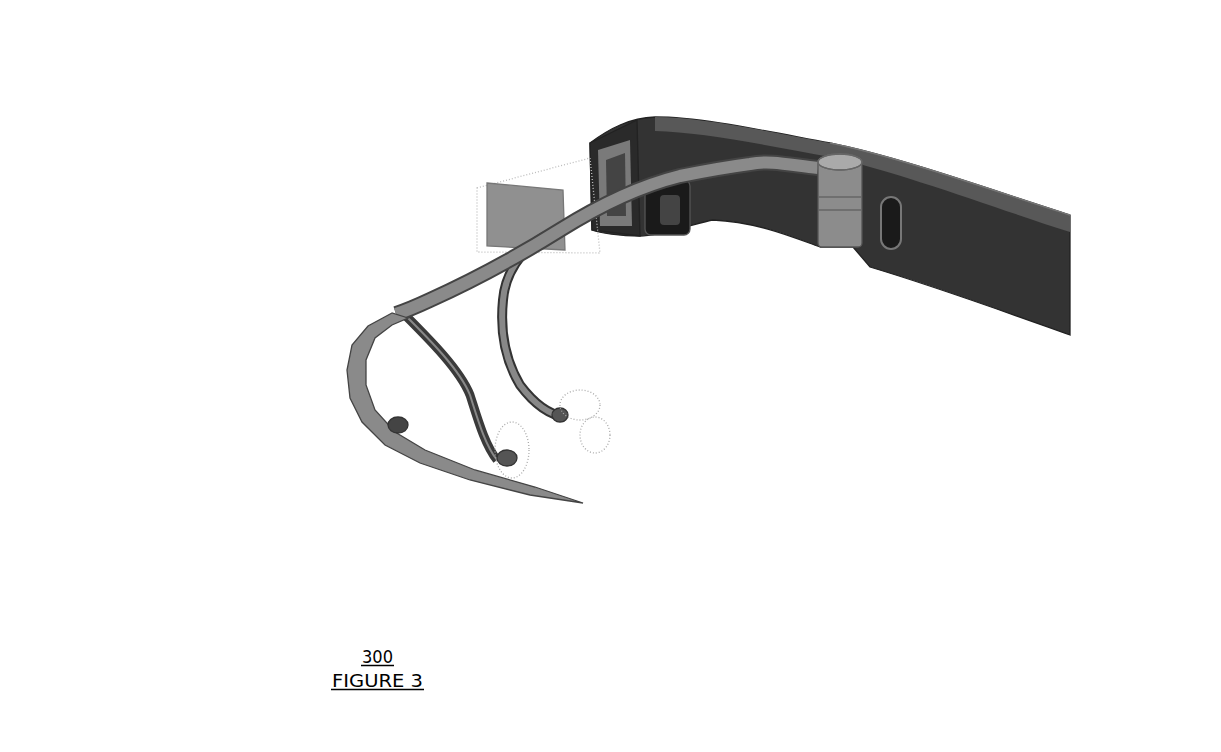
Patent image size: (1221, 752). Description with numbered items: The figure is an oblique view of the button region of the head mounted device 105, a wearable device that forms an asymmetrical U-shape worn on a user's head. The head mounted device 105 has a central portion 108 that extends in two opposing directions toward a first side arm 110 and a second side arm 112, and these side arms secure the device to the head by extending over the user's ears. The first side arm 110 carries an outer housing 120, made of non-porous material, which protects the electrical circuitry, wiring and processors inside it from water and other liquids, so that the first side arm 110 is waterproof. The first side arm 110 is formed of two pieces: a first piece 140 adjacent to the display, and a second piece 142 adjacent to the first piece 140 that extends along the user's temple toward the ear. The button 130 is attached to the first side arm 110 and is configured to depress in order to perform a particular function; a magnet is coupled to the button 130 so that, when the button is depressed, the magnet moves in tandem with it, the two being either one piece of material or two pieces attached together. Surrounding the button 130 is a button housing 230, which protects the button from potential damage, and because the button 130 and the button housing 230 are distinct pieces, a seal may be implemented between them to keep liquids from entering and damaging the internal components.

The head mounted device 105 is at (372, 120).
The central portion 108 is at (397, 300).
The first side arm 110 is at (1082, 184).
The second side arm 112 is at (390, 450).
The outer housing 120 is at (493, 180).
The button 130 is at (833, 150).
The first piece 140 is at (678, 116).
The second piece 142 is at (967, 180).
The button housing 230 is at (829, 252).